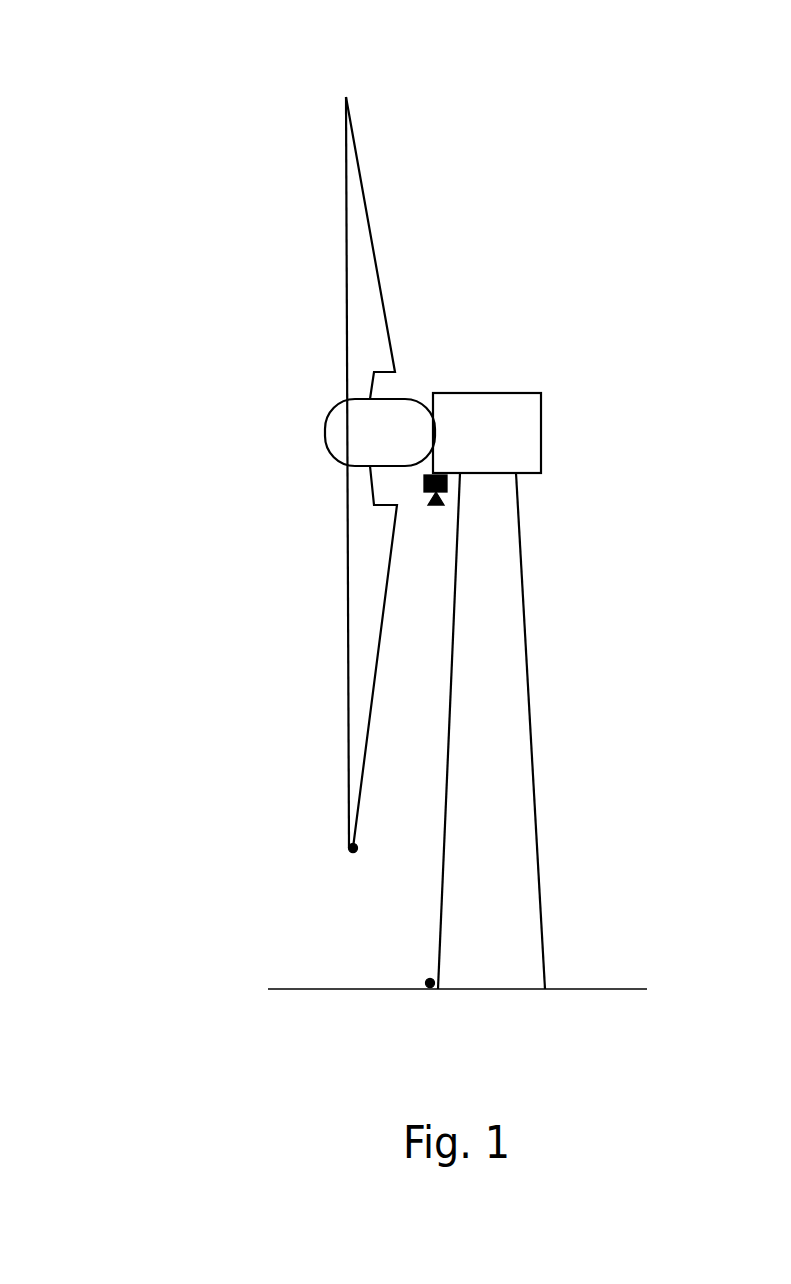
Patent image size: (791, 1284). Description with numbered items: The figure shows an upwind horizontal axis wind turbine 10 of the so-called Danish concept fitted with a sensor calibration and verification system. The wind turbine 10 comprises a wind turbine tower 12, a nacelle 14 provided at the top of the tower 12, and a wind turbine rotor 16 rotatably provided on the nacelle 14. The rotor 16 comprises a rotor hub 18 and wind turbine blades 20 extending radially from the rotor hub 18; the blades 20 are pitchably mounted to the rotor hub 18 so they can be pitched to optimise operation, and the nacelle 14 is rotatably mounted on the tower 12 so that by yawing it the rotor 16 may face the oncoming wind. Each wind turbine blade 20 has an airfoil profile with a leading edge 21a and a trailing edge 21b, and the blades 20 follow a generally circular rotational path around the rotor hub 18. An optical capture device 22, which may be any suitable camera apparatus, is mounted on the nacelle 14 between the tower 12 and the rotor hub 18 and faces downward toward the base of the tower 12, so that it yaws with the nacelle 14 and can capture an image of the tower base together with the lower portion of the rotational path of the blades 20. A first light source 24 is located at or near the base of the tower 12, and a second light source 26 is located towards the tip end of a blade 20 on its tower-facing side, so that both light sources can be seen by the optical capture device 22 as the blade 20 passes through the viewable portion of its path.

The wind turbine 10 is at (520, 80).
The wind turbine tower 12 is at (510, 902).
The nacelle 14 is at (508, 417).
The wind turbine rotor 16 is at (155, 315).
The rotor hub 18 is at (347, 422).
The wind turbine blade 20 is at (345, 122).
The leading edge 21a is at (345, 215).
The trailing edge 21b is at (377, 250).
The optical capture device 22 is at (447, 483).
The first light source 24 is at (430, 985).
The second light source 26 is at (353, 848).